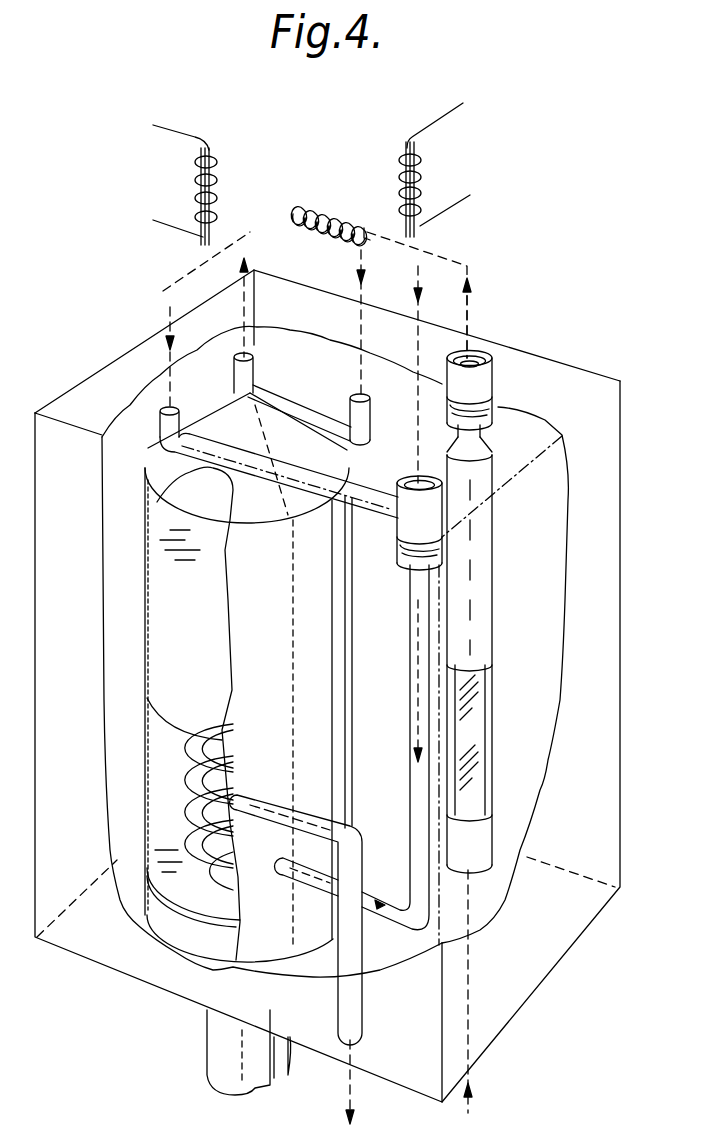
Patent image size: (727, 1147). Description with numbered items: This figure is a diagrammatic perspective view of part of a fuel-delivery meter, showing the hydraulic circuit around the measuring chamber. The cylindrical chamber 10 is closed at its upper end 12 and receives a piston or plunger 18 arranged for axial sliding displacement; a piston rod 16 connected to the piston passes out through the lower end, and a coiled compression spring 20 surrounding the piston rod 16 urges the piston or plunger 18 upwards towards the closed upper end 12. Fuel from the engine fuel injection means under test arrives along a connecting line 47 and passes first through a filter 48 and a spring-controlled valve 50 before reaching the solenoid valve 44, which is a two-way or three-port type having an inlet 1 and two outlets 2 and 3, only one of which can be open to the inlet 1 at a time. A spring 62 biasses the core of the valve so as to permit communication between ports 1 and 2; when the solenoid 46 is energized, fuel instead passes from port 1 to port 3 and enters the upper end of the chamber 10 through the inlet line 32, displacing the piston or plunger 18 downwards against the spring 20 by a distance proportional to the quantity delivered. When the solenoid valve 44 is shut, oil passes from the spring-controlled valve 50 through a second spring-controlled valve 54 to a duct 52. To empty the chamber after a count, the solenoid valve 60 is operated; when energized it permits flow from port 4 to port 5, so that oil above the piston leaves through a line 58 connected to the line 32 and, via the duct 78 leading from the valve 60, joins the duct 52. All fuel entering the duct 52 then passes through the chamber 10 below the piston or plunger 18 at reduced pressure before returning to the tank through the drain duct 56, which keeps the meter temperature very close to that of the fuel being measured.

The inlet 1 is at (477, 318).
The outlet 2 is at (427, 374).
The outlet 3 is at (371, 324).
The port 4 is at (213, 292).
The port 5 is at (160, 347).
The cylindrical chamber 10 is at (146, 526).
The closed upper end 12 is at (213, 408).
The piston rod 16 is at (205, 750).
The piston or plunger 18 is at (150, 633).
The coiled compression spring 20 is at (178, 807).
The inlet line 32 is at (297, 405).
The solenoid valve 44 is at (433, 245).
The solenoid 46 is at (425, 174).
The connecting line 47 is at (470, 993).
The filter 48 is at (477, 726).
The spring-controlled valve 50 is at (492, 374).
The duct 52 is at (410, 777).
The second spring-controlled valve 54 is at (412, 503).
The drain duct 56 is at (352, 942).
The line 58 is at (250, 372).
The solenoid valve 60 is at (222, 227).
The spring 62 is at (330, 206).
The duct 78 is at (283, 477).